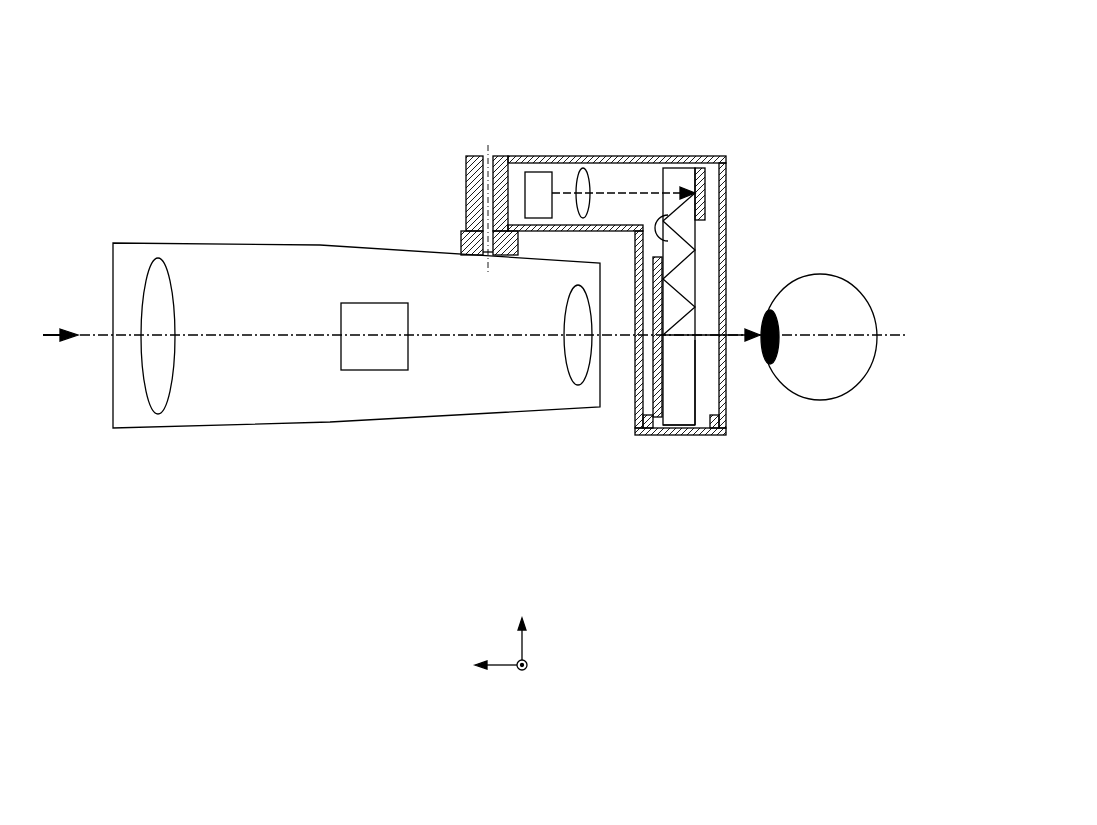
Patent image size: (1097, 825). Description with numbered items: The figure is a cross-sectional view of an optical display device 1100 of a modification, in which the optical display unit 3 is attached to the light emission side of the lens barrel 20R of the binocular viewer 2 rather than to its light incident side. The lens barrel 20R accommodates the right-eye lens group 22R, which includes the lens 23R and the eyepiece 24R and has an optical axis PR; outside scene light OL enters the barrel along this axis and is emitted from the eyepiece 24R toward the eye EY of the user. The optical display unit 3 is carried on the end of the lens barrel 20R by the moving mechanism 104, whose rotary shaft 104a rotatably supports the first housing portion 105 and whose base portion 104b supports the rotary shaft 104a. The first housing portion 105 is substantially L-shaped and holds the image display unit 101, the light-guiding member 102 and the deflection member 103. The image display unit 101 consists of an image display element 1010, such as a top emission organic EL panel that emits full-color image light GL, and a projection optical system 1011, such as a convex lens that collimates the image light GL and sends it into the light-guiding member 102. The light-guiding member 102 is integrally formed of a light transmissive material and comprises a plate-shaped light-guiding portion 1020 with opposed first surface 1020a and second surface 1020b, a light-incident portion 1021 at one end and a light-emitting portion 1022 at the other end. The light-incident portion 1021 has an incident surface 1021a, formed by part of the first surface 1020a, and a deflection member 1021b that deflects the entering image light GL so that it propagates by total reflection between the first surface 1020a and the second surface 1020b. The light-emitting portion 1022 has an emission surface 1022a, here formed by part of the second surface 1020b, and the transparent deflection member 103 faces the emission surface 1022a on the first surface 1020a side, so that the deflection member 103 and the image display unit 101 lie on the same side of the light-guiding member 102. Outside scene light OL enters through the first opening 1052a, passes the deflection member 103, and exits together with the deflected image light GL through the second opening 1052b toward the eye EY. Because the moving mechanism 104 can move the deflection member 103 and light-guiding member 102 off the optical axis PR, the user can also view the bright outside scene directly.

The binocular viewer 2 is at (195, 232).
The lens barrel 20R is at (342, 424).
The right-eye lens group 22R is at (364, 392).
The front lens 23R is at (160, 408).
The eyepiece 24R is at (575, 383).
The optical display unit 3 is at (740, 186).
The optical display device 1100 is at (715, 92).
The image display unit 101 is at (430, 62).
The image display element 1010 is at (540, 168).
The projection optical system 1011 is at (583, 165).
The moving mechanism 104 is at (350, 150).
The rotary shaft 104a is at (465, 182).
The base portion 104b is at (460, 246).
The first housing portion 105 is at (600, 156).
The light-guiding member 102 is at (680, 418).
The deflection member 103 is at (655, 430).
The light-guiding portion 1020 is at (684, 278).
The first surface 1020a is at (668, 241).
The second surface 1020b is at (697, 381).
The light-incident portion 1021 is at (672, 156).
The incident surface 1021a is at (795, 217).
The deflection member 1021b is at (703, 156).
The light-emitting portion 1022 is at (690, 405).
The emission surface 1022a is at (827, 403).
The first opening 1052a is at (728, 403).
The second opening 1052b is at (635, 412).
The image light GL is at (622, 175).
The outside scene light OL is at (58, 347).
The eye EY is at (840, 380).
The optical axis PR is at (893, 337).